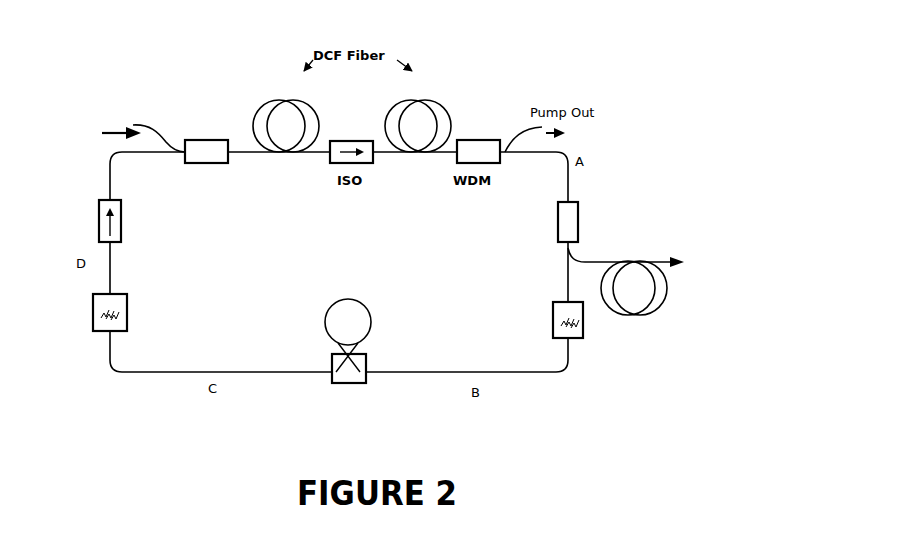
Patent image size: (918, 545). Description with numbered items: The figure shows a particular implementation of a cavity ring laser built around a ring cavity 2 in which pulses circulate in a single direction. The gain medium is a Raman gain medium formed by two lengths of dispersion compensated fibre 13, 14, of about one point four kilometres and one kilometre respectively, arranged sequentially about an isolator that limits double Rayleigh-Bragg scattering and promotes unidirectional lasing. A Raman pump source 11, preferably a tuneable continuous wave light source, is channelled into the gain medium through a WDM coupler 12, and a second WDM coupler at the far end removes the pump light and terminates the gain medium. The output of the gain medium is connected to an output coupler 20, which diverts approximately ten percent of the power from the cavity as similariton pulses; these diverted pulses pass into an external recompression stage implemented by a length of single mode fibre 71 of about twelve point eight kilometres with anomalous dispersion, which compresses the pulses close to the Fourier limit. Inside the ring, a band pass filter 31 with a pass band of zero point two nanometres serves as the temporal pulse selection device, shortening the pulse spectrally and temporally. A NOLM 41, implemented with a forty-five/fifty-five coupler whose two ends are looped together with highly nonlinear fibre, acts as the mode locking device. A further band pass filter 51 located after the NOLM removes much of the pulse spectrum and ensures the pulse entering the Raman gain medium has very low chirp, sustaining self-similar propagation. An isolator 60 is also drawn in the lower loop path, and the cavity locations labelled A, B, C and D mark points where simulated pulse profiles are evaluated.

The cavity 2 is at (630, 71).
The Raman pump source 11 is at (84, 80).
The WDM coupler 12 is at (180, 112).
The dispersion compensated fibre 13 is at (252, 88).
The dispersion compensated fibre 14 is at (445, 93).
The output coupler 20 is at (652, 173).
The band pass filter 31 is at (580, 352).
The NOLM 41 is at (388, 305).
The band pass filter 51 is at (93, 344).
The isolator 60 is at (88, 196).
The single mode fibre 71 is at (683, 281).